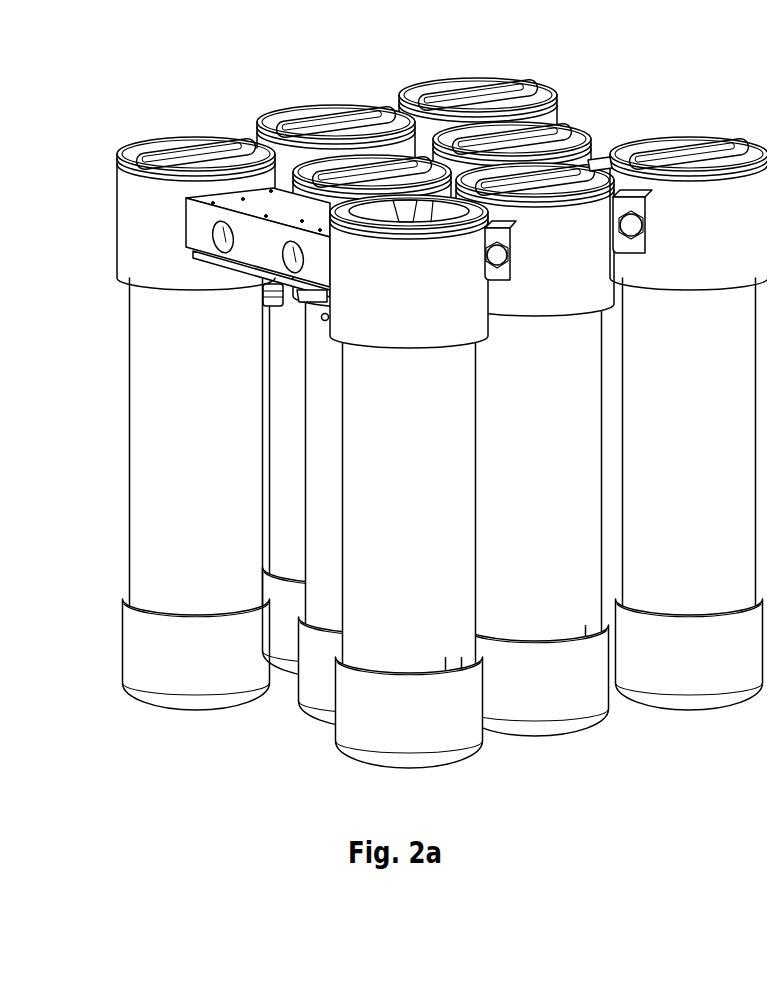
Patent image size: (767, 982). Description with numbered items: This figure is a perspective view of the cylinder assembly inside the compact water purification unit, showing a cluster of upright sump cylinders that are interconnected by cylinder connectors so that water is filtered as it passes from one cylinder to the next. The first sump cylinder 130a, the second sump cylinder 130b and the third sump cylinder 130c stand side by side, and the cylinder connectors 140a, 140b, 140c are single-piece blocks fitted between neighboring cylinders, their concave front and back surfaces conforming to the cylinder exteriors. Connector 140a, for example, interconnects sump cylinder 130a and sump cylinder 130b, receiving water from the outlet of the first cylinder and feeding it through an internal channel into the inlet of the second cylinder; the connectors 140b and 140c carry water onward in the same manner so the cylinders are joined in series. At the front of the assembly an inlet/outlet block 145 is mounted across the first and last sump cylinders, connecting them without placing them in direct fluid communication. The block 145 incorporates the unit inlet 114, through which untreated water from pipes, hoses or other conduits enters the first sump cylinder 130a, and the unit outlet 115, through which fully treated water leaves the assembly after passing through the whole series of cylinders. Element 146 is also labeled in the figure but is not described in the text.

The unit inlet 114 is at (303, 261).
The unit outlet 115 is at (226, 240).
The first sump cylinder 130a is at (222, 592).
The second sump cylinder 130b is at (575, 620).
The third sump cylinder 130c is at (722, 598).
The cylinder connector 140a is at (510, 233).
The cylinder connector 140b is at (645, 205).
The cylinder connector 140c is at (602, 158).
The inlet/outlet block 145 is at (263, 243).
The fastener 146 is at (268, 216).